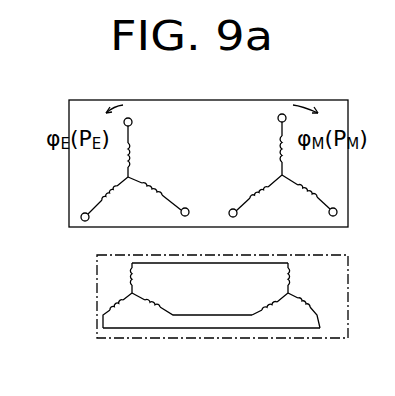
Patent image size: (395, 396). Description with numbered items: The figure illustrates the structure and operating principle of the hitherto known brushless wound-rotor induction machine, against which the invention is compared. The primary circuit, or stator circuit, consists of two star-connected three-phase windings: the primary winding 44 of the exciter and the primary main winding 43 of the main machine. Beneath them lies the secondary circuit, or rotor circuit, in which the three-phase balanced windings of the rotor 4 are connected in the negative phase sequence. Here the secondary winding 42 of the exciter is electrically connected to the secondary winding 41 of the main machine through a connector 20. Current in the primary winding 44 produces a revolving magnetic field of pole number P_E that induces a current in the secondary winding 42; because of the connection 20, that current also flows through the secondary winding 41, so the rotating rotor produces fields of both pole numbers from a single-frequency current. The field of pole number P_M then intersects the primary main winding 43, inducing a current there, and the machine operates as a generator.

The motor 4 is at (103, 272).
The connector 20 is at (215, 329).
The secondary winding 41 is at (304, 306).
The secondary winding 42 is at (118, 308).
The primary main winding 43 is at (315, 188).
The primary winding 44 is at (98, 193).